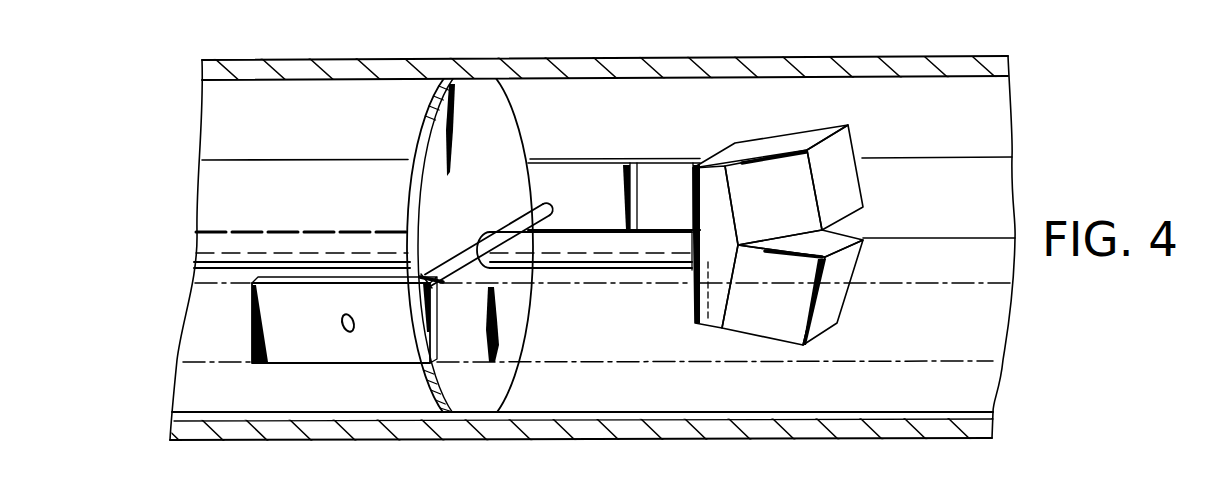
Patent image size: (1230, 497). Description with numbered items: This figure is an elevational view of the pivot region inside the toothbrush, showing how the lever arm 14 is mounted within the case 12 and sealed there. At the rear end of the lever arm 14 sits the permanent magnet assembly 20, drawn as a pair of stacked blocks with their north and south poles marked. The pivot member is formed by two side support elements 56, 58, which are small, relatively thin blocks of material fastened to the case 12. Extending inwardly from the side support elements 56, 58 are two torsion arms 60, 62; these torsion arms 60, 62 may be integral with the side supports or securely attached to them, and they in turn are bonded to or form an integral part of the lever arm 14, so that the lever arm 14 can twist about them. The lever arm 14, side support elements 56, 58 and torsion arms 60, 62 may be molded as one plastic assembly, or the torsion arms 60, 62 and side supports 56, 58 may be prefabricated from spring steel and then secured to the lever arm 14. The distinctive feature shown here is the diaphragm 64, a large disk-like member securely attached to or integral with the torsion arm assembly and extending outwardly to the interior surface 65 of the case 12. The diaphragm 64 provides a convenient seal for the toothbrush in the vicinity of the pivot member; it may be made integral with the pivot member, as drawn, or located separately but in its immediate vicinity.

The case 12 is at (655, 61).
The lever arm 14 is at (628, 264).
The permanent magnet assembly 20 is at (750, 124).
The side support element 56 is at (588, 173).
The side support element 58 is at (312, 348).
The torsion arm 60 is at (528, 177).
The torsion arm 62 is at (447, 254).
The diaphragm 64 is at (482, 90).
The interior surface 65 is at (333, 82).